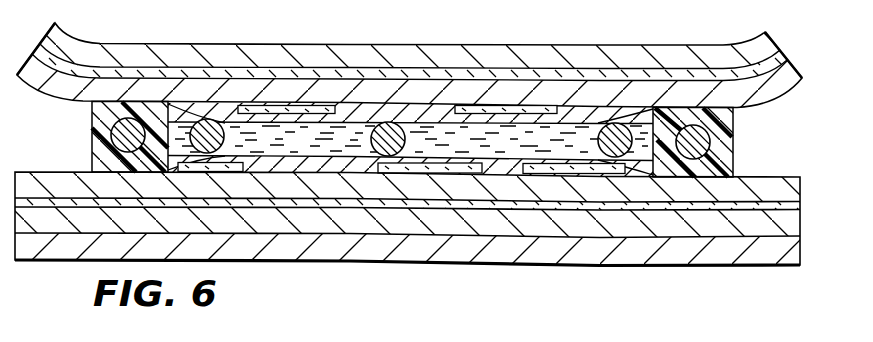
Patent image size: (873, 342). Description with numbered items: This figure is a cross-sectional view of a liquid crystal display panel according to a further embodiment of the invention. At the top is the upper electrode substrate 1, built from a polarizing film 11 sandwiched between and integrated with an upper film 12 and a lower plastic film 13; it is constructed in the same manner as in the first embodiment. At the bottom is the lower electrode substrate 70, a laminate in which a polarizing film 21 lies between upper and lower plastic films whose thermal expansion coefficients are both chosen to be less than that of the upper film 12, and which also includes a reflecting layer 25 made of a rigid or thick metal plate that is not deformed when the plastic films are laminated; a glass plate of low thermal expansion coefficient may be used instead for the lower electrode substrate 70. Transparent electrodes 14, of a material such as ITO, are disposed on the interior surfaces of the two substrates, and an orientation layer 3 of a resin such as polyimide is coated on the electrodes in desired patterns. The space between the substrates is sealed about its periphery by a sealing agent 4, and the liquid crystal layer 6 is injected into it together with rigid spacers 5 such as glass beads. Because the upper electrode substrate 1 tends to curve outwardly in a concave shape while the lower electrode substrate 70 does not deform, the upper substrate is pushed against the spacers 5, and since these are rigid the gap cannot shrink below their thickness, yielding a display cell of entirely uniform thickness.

The upper electrode substrate 1 is at (442, 64).
The orientation layer 3 is at (217, 112).
The sealing agent 4 is at (407, 237).
The spacers 5 is at (374, 141).
The liquid crystal layer 6 is at (261, 152).
The polarizing film 11 is at (776, 57).
The upper film 12 is at (768, 34).
The lower plastic film 13 is at (428, 81).
The transparent electrodes 14 is at (310, 107).
The polarizing film 21 is at (640, 210).
The reflecting layer 25 is at (765, 228).
The lower electrode substrate 70 is at (500, 293).